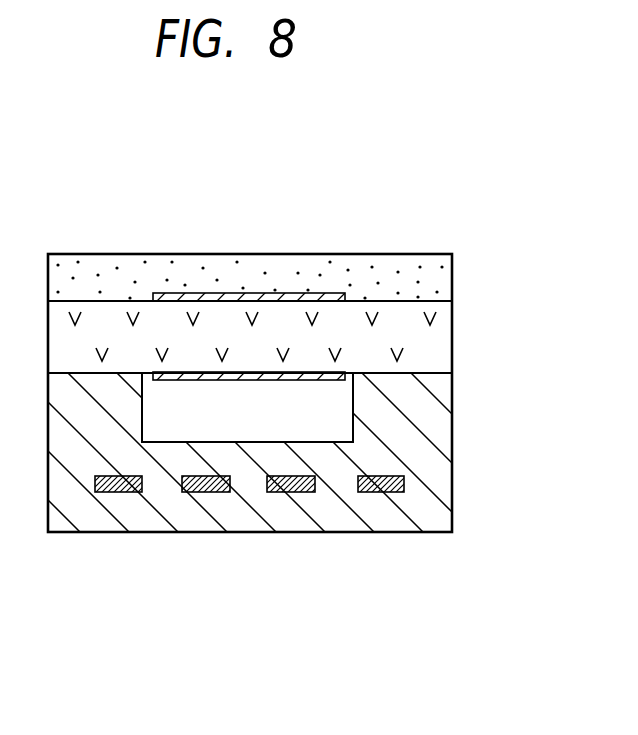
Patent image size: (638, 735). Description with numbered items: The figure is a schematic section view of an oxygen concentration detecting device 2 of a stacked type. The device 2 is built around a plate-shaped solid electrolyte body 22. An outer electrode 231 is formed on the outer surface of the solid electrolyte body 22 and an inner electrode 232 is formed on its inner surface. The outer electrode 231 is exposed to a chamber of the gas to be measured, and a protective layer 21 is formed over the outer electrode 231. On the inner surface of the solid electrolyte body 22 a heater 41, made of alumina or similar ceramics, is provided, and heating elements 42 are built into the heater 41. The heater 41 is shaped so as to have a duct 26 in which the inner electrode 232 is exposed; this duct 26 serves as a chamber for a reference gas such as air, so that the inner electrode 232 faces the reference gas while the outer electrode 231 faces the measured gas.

The oxygen concentration detecting device 2 is at (166, 228).
The protective layer 21 is at (427, 282).
The solid electrolyte body 22 is at (427, 348).
The outer electrode 231 is at (272, 292).
The inner electrode 232 is at (312, 382).
The duct 26 is at (248, 408).
The heater 41 is at (415, 453).
The heating elements 42 is at (406, 483).